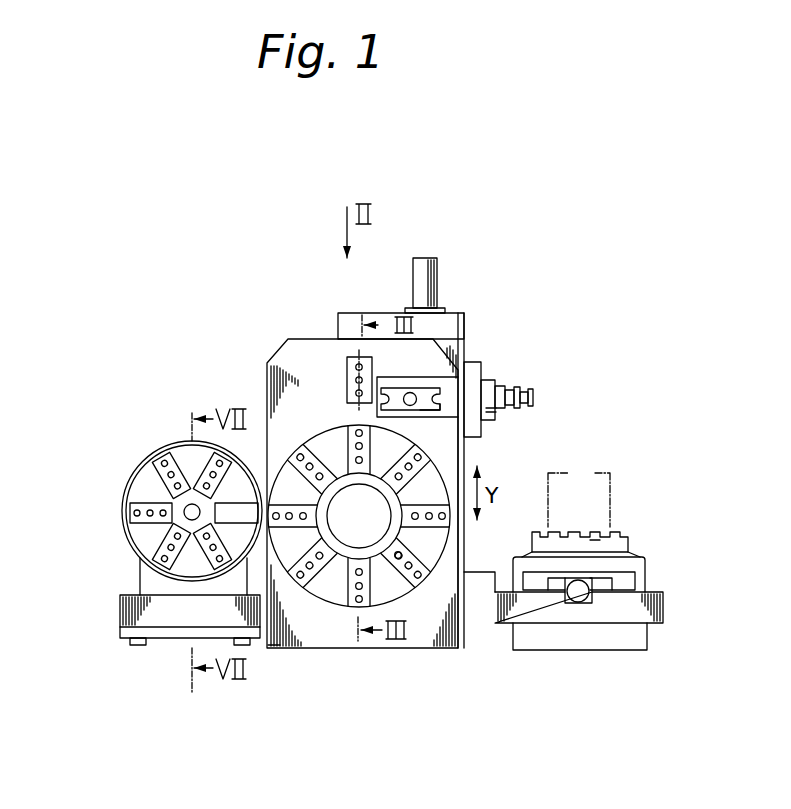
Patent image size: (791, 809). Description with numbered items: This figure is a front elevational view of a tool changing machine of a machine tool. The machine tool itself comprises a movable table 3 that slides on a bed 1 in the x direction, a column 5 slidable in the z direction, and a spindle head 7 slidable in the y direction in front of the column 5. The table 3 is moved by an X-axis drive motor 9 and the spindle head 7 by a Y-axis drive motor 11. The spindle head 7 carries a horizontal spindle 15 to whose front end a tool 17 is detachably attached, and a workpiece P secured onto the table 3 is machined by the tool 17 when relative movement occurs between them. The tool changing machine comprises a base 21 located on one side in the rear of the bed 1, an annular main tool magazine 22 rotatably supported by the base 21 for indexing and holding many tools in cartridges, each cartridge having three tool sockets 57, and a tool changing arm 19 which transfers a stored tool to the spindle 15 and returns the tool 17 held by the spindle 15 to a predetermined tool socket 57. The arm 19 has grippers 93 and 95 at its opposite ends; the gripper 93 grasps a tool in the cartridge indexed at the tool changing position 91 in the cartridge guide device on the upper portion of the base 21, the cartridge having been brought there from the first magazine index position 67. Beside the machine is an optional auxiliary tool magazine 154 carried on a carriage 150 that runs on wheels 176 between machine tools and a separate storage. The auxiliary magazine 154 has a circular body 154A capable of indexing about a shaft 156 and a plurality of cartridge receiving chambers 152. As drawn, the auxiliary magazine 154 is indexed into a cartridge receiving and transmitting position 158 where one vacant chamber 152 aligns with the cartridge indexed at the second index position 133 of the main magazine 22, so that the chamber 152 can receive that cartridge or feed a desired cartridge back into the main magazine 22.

The bed 1 is at (650, 594).
The movable table 3 is at (570, 540).
The column 5 is at (466, 328).
The spindle head 7 is at (483, 376).
The X-axis drive motor 9 is at (578, 603).
The Y-axis drive motor 11 is at (437, 276).
The spindle 15 is at (483, 420).
The tool 17 is at (533, 398).
The tool changing arm 19 is at (427, 392).
The base 21 is at (318, 633).
The main tool magazine 22 is at (402, 610).
The tool socket 57 is at (398, 558).
The first magazine index position 67 is at (350, 413).
The tool changing position 91 is at (346, 392).
The gripper 93 is at (381, 387).
The gripper 95 is at (442, 406).
The second index position 133 is at (272, 648).
The carriage 150 is at (130, 612).
The cartridge receiving chamber 152 is at (142, 520).
The auxiliary tool magazine 154 is at (125, 482).
The circular body 154A is at (150, 488).
The shaft 156 is at (190, 503).
The cartridge receiving and transmitting position 158 is at (243, 508).
The wheels 176 is at (136, 645).
The workpiece P is at (612, 476).